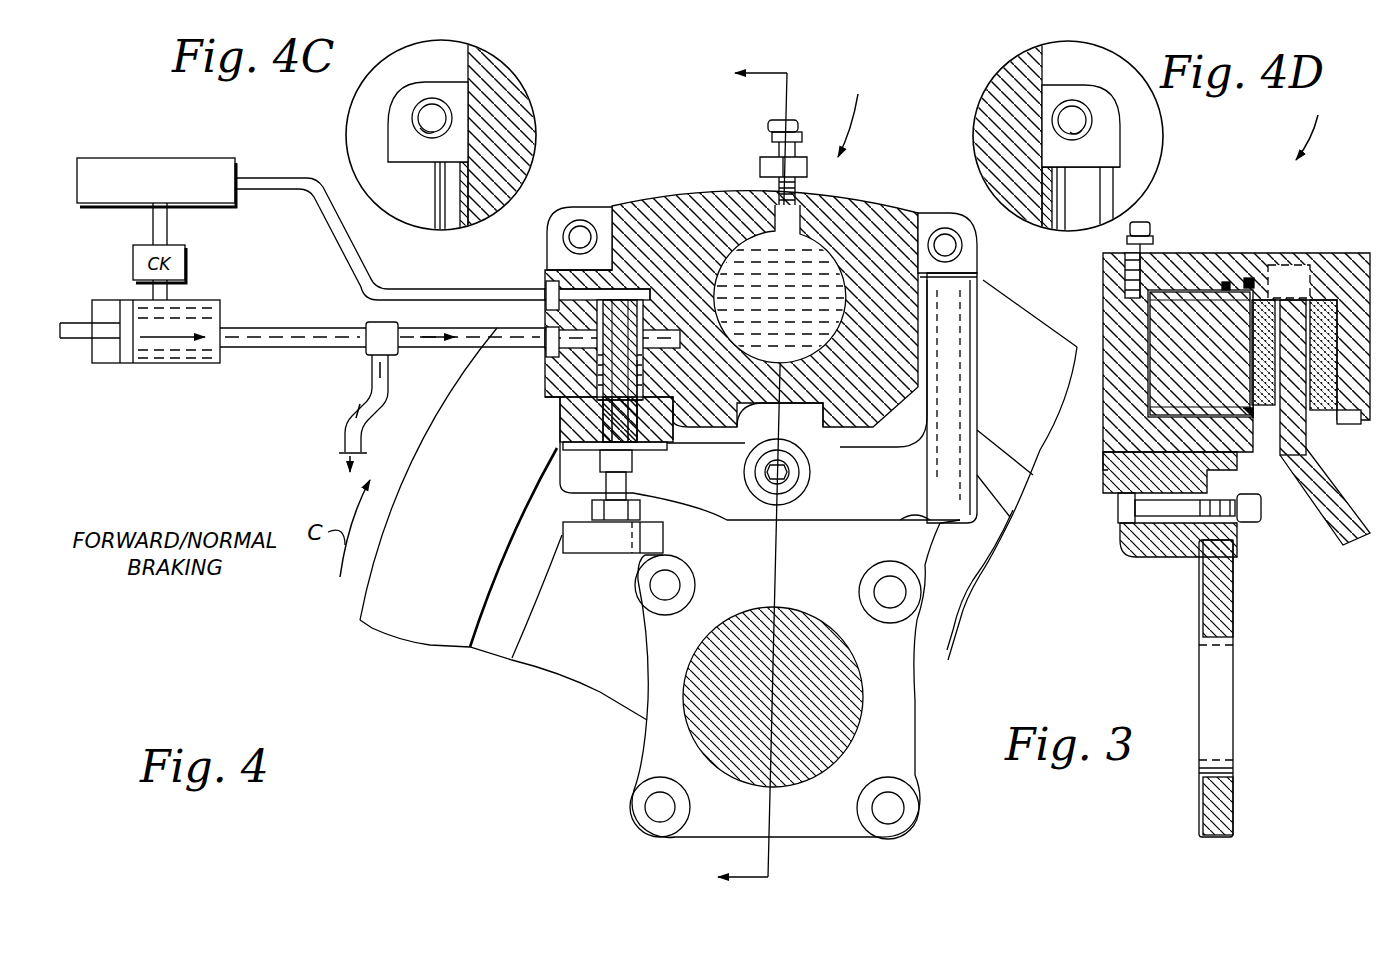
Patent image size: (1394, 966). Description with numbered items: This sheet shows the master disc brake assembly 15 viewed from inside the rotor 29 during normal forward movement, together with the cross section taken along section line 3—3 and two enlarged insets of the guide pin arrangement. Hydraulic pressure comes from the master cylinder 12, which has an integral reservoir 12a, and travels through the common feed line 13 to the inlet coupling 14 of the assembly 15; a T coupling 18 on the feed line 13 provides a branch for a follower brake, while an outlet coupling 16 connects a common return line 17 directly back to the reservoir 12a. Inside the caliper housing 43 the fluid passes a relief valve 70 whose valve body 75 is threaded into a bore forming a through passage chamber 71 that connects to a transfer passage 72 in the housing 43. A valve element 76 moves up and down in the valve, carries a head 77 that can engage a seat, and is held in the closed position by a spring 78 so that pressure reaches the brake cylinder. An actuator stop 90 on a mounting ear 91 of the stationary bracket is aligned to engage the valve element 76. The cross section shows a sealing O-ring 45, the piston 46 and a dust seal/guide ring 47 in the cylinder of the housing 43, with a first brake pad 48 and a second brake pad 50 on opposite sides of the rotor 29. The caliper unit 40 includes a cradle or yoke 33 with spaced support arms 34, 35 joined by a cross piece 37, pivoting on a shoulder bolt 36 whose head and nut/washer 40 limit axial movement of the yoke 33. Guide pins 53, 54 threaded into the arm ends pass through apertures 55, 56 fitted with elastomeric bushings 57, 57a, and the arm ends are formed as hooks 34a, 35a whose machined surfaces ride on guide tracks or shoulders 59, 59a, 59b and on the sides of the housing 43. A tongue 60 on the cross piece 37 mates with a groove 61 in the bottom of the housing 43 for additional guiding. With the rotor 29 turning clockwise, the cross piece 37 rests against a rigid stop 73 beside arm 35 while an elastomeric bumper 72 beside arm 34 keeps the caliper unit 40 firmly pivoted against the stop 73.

In FIG. 4, the master cylinder 12 is at (165, 363).
In FIG. 4, the reservoir 12a is at (203, 158).
In FIG. 4, the common feed line 13 is at (422, 347).
In FIG. 4, the inlet coupling 14 is at (553, 357).
In FIG. 4, the master disc brake assembly 15 is at (856, 111).
In FIG. 3, the master disc brake assembly 15 is at (1314, 122).
In FIG. 4, the outlet coupling 16 is at (548, 283).
In FIG. 4, the common return/exhaust line 17 is at (280, 190).
In FIG. 4, the T coupling 18 is at (382, 324).
In FIG. 4, the rotor 29 is at (380, 608).
In FIG. 3, the rotor 29 is at (1322, 495).
In FIG. 4, the section line 3— 3 is at (739, 482).
In FIG. 3, the cradle/yoke 33 is at (1098, 466).
In FIG. 4, the support arm 34 is at (563, 461).
In FIG. 4, the hook 34a is at (604, 215).
In FIG. 4C, the hook 34a is at (437, 92).
In FIG. 4, the support arm 35 is at (955, 392).
In FIG. 4, the hook 35a is at (942, 225).
In FIG. 4, the shoulder bolt 36 is at (777, 522).
In FIG. 3, the shoulder bolt 36 is at (1160, 545).
In FIG. 4, the cross piece 37 is at (708, 508).
In FIG. 3, the cross piece 37 is at (1125, 480).
In FIG. 3, the caliper unit 40 is at (1097, 292).
In FIG. 4, the housing 43 is at (715, 205).
In FIG. 4C, the housing 43 is at (515, 135).
In FIG. 4D, the housing 43 is at (990, 110).
In FIG. 3, the housing 43 is at (1215, 253).
In FIG. 3, the sealing O-ring 45 is at (1228, 283).
In FIG. 3, the piston 46 is at (1185, 300).
In FIG. 3, the dust seal/guide ring 47 is at (1255, 280).
In FIG. 3, the brake pad 48 is at (1266, 405).
In FIG. 3, the second brake pad 50 is at (1322, 410).
In FIG. 4, the guide pin 53 is at (580, 235).
In FIG. 4C, the guide pin 53 is at (428, 117).
In FIG. 4, the guide pin 54 is at (948, 244).
In FIG. 4D, the guide pin 54 is at (1072, 118).
In FIG. 4C, the aperture 55 is at (427, 133).
In FIG. 4D, the aperture 56 is at (1082, 130).
In FIG. 4, the elastomeric bushing 57 is at (566, 236).
In FIG. 4C, the elastomeric bushing 57 is at (420, 130).
In FIG. 4D, the elastomeric bushing 57a is at (1085, 112).
In FIG. 4, the guide track 59 is at (540, 212).
In FIG. 4D, the guide track 59a is at (1010, 140).
In FIG. 4, the shoulder 59b is at (960, 290).
In FIG. 4, the tongue 60 is at (810, 473).
In FIG. 4, the groove 61 is at (735, 445).
In FIG. 4, the relief valve 70 is at (545, 413).
In FIG. 4, the through passage chamber 71 is at (645, 365).
In FIG. 4, the elastomeric bumper 72 is at (580, 508).
In FIG. 4, the rigid stop 73 is at (987, 580).
In FIG. 4, the valve body 75 is at (667, 388).
In FIG. 4, the valve element 76 is at (548, 304).
In FIG. 4, the head 77 is at (630, 208).
In FIG. 4, the spring 78 is at (556, 393).
In FIG. 4, the actuator stop 90 is at (580, 477).
In FIG. 4, the mounting ear 91 is at (580, 560).